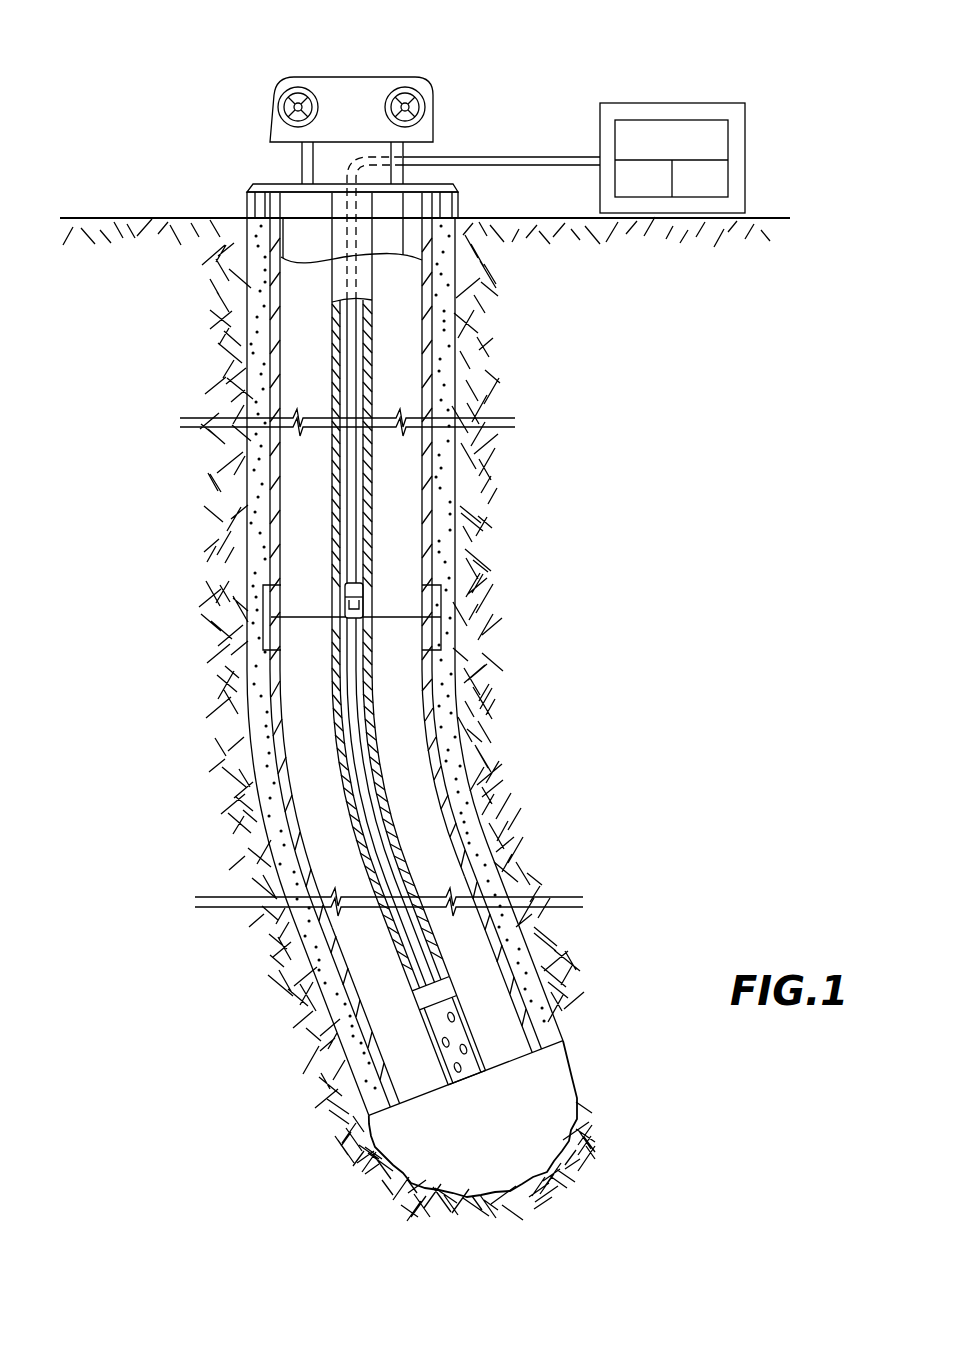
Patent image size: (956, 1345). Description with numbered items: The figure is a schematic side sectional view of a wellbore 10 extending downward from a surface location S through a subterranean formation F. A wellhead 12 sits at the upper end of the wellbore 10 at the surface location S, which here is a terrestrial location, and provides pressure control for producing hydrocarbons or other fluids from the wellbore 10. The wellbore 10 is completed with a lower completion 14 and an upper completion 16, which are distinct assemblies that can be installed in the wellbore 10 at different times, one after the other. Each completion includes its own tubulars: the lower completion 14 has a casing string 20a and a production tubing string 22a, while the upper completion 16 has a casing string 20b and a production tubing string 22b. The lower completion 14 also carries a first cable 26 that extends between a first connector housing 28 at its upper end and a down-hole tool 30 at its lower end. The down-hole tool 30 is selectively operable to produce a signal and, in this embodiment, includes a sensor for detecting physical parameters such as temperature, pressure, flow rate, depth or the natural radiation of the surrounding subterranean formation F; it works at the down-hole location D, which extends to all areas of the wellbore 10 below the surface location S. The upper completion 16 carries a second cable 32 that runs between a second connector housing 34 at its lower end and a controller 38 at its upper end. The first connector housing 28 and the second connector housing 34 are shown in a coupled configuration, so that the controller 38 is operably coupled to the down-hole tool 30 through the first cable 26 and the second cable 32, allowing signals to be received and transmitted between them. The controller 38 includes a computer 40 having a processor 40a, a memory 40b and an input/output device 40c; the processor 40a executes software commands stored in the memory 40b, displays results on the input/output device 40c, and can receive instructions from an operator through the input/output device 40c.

The wellbore 10 is at (443, 92).
The wellhead 12 is at (327, 77).
The lower completion 14 is at (437, 710).
The upper completion 16 is at (433, 310).
The casing string 20a is at (467, 860).
The casing string 20b is at (433, 496).
The production tubing string 22a is at (403, 843).
The production tubing string 22b is at (373, 390).
The first cable 26 is at (353, 732).
The first connector housing 28 is at (445, 620).
The down-hole tool 30 is at (410, 993).
The second cable 32 is at (350, 522).
The second connector housing 34 is at (372, 588).
The controller 38 is at (690, 103).
The computer 40 is at (712, 157).
The processor 40a is at (690, 150).
The memory 40b is at (663, 190).
The input/output device 40c is at (718, 190).
The surface location S is at (133, 218).
The subterranean formation F is at (198, 663).
The down-hole location D is at (410, 1080).